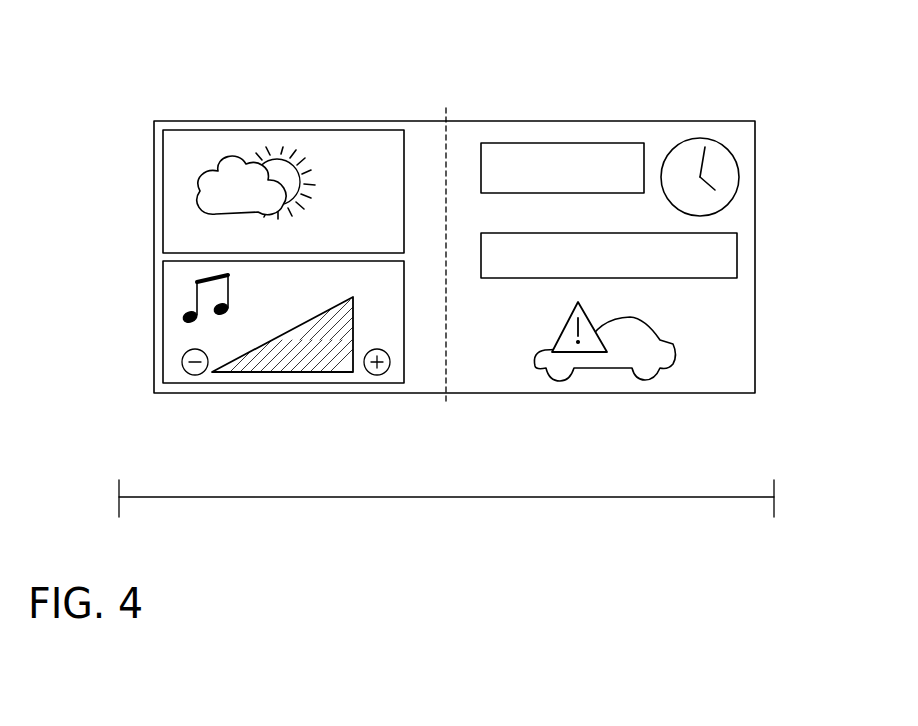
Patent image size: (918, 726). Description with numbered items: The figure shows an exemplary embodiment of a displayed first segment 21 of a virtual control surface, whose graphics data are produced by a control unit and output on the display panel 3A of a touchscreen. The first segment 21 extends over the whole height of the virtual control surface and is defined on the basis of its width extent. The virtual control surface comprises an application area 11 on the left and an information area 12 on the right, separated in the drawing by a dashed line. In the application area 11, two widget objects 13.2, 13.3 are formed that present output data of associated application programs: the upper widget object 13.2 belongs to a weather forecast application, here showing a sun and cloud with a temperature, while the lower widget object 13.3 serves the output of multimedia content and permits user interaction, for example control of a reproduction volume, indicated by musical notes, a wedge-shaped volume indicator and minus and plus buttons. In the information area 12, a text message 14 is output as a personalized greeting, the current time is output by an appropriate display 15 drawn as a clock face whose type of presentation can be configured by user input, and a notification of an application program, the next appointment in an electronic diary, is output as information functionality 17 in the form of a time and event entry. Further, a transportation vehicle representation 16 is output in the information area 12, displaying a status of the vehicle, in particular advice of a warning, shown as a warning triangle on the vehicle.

The display panel 3A is at (756, 120).
The application area 11 is at (447, 403).
The information area 12 is at (773, 403).
The upper widget object 13.2 is at (292, 130).
The lower widget object 13.3 is at (162, 330).
The text message 14 is at (553, 144).
The display 15 is at (748, 174).
The transportation vehicle representation 16 is at (683, 357).
The information functionality 17 is at (741, 255).
The first segment 21 is at (446, 509).